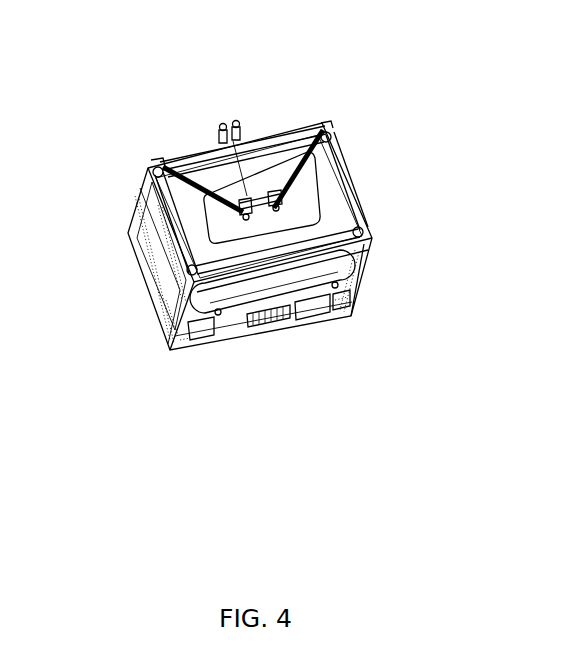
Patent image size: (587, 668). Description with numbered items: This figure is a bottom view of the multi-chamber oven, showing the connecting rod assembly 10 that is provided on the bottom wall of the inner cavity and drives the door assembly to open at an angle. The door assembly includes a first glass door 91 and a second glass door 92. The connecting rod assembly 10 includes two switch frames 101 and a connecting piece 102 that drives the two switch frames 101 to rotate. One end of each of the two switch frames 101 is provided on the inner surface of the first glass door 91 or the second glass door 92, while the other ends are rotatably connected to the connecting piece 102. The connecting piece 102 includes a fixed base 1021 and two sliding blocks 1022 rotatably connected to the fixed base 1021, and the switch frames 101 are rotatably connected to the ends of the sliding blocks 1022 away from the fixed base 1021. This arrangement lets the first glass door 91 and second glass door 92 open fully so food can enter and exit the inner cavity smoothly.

The connecting rod assembly 10 is at (280, 198).
The first glass door 91 is at (177, 150).
The second glass door 92 is at (265, 137).
The switch frame 101 is at (153, 161).
The connecting piece 102 is at (285, 201).
The fixed base 1021 is at (227, 132).
The sliding block 1022 is at (238, 204).